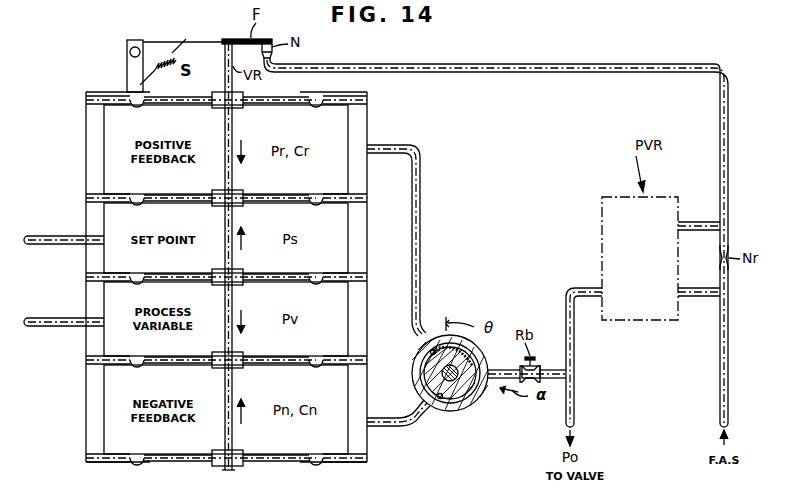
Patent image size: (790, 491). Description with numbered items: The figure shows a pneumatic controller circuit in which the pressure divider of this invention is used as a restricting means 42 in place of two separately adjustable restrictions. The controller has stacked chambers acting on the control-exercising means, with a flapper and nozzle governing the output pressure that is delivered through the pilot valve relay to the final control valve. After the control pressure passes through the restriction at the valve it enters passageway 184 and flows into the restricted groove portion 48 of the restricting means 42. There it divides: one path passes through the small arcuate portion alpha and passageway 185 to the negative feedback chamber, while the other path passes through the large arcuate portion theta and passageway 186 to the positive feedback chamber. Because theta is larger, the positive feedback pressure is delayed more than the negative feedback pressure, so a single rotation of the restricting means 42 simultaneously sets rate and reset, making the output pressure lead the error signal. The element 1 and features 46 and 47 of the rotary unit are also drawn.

The spring anchor 1 is at (161, 60).
The restricting means 42 is at (412, 373).
The lower port slot 46 is at (452, 401).
The rotor 47 is at (424, 350).
The restricted groove portion 48 is at (466, 345).
The passageway 184 is at (508, 366).
The passageway 185 is at (397, 428).
The passageway 186 is at (421, 228).